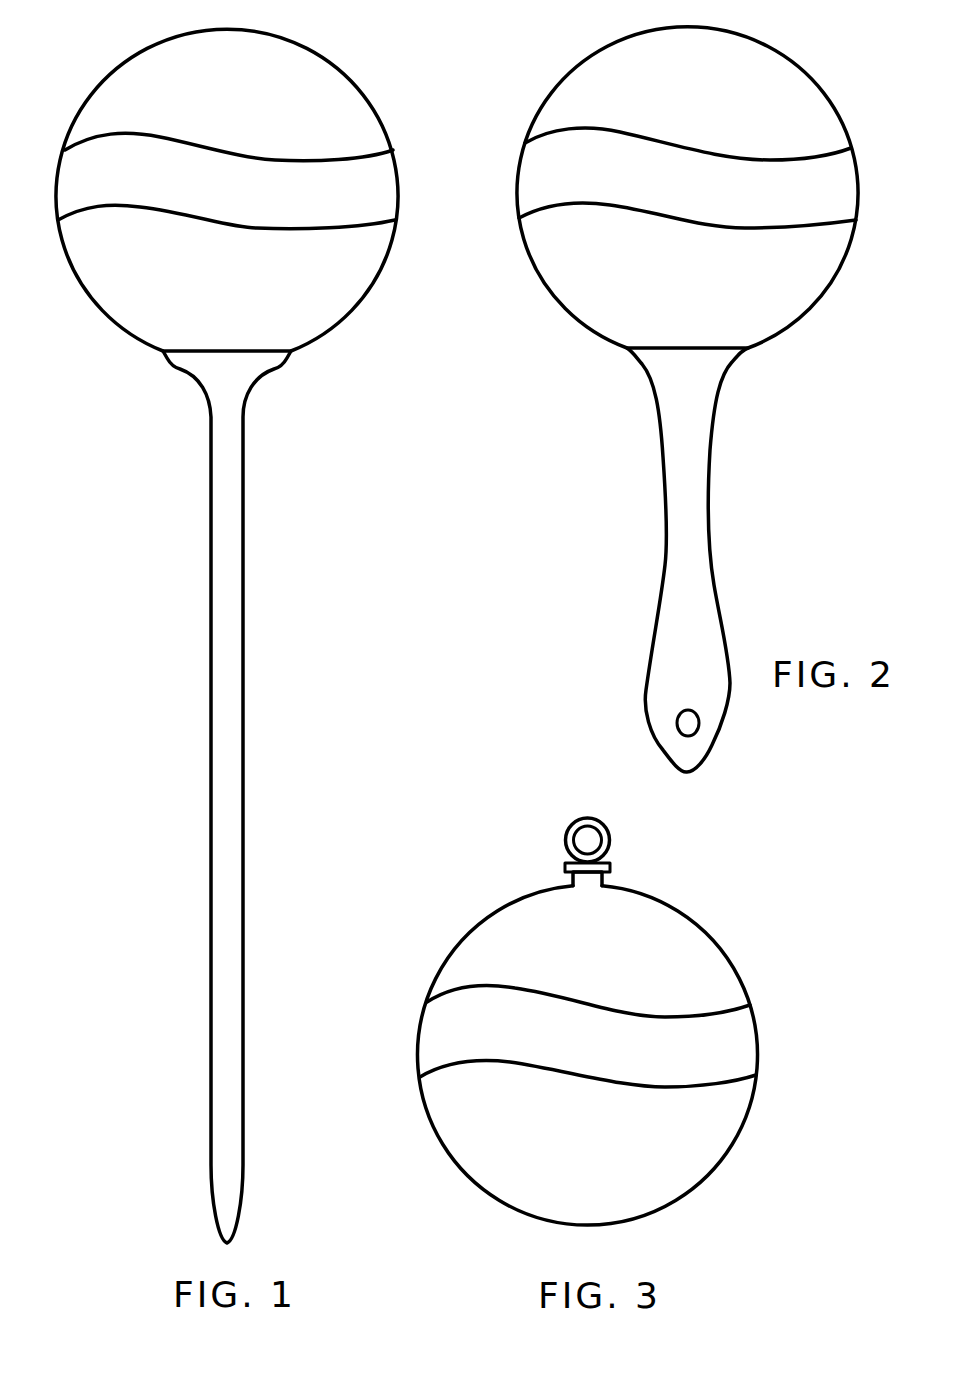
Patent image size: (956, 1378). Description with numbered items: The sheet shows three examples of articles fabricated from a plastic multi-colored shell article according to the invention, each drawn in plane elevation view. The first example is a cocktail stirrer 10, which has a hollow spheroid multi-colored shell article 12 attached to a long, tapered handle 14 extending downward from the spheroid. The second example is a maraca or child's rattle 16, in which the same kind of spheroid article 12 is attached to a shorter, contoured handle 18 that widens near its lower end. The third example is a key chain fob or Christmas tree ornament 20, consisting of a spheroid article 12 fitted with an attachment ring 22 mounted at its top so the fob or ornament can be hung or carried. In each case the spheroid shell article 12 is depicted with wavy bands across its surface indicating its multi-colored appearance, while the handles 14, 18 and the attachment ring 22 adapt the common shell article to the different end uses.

In FIG. 1, the cocktail stirrer 10 is at (261, 636).
In FIG. 1, the hollow spheroid multi-colored shell article 12 is at (372, 288).
In FIG. 2, the hollow spheroid multi-colored shell article 12 is at (553, 95).
In FIG. 3, the hollow spheroid multi-colored shell article 12 is at (722, 957).
In FIG. 1, the handle 14 is at (238, 752).
In FIG. 2, the maraca or child's rattle 16 is at (660, 389).
In FIG. 2, the handle 18 is at (670, 593).
In FIG. 3, the key chain fob or Christmas tree ornament 20 is at (614, 988).
In FIG. 3, the attachment ring 22 is at (565, 841).